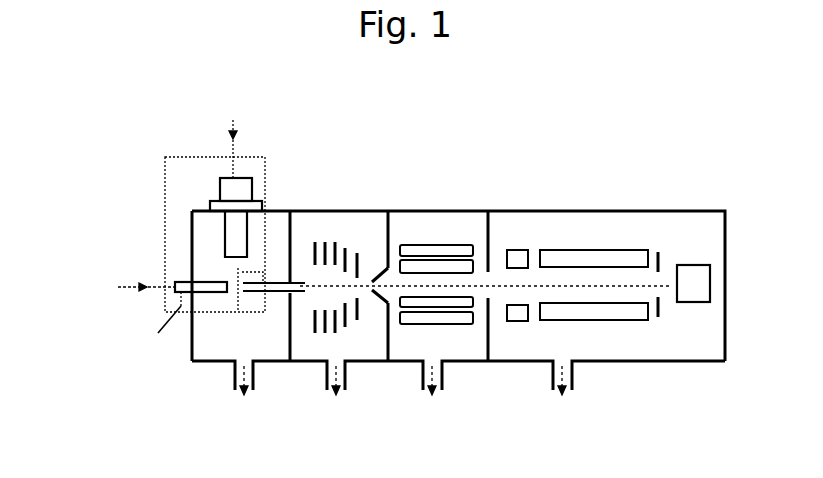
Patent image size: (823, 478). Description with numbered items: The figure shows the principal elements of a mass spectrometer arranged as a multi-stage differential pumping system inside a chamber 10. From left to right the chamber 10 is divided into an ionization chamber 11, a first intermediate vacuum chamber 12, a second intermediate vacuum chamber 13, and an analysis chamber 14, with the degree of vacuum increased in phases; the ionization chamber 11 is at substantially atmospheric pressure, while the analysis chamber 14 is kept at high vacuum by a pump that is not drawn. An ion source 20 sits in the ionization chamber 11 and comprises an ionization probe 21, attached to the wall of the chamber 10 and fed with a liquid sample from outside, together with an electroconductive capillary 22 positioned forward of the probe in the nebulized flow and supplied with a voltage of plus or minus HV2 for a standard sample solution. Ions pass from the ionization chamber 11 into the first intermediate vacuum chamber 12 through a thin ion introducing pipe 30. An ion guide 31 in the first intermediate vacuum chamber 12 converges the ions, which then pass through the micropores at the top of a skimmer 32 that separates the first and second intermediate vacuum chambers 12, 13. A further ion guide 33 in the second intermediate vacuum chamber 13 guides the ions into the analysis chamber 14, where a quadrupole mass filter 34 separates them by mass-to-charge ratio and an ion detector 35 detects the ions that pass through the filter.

The chamber 10 is at (503, 210).
The ionization chamber 11 is at (223, 355).
The first intermediate vacuum chamber 12 is at (315, 355).
The second intermediate vacuum chamber 13 is at (410, 353).
The analysis chamber 14 is at (525, 352).
The ion source 20 is at (165, 193).
The ionization probe 21 is at (218, 192).
The electroconductive capillary 22 is at (193, 278).
The ion introducing pipe 30 is at (275, 278).
The ion guide 31 is at (333, 235).
The skimmer 32 is at (375, 275).
The ion guide 33 is at (443, 245).
The quadrupole mass filter 34 is at (595, 250).
The ion detector 35 is at (690, 265).